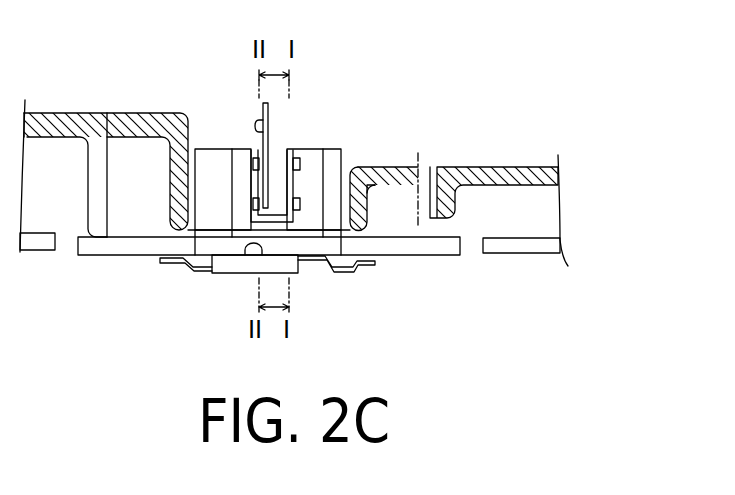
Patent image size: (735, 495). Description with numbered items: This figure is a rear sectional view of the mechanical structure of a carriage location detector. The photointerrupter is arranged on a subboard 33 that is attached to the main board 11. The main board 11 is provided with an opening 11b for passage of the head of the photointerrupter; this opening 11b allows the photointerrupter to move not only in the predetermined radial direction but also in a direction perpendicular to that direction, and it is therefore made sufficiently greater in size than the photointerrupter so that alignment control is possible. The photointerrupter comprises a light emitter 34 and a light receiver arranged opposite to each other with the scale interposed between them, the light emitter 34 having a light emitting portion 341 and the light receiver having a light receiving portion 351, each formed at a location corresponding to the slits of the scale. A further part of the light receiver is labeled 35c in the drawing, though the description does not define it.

The main board 11 is at (61, 113).
The opening 11b is at (346, 176).
The subboard 33 is at (108, 256).
The light emitter 34 is at (318, 165).
The light emitting portion 341 is at (312, 167).
The light receiving portion 351 is at (251, 162).
The support block 35c is at (240, 153).